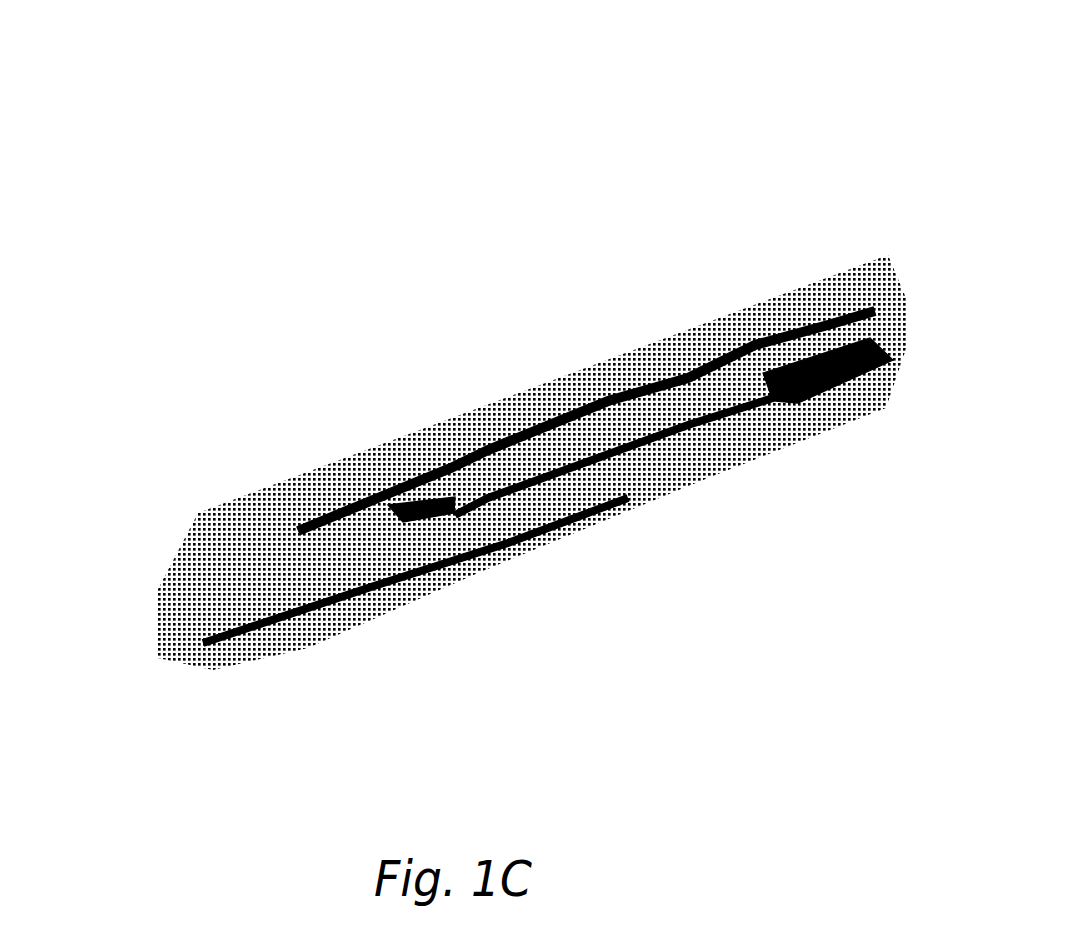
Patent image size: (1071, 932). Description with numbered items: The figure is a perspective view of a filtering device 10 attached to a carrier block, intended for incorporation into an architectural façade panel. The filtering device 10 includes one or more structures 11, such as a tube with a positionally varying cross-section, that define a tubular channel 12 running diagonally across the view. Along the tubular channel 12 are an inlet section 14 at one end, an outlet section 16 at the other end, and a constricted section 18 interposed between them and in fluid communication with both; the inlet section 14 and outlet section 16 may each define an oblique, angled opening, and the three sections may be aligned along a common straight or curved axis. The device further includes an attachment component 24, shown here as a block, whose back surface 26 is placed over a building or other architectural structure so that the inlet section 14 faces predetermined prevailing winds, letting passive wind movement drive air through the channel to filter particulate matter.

The filtering device 10 is at (777, 139).
The structure 11 is at (665, 433).
The tubular channel 12 is at (365, 523).
The inlet section 14 is at (737, 367).
The outlet section 16 is at (452, 477).
The constricted section 18 is at (607, 382).
The attachment component 24 is at (260, 472).
The back surface 26 is at (295, 437).